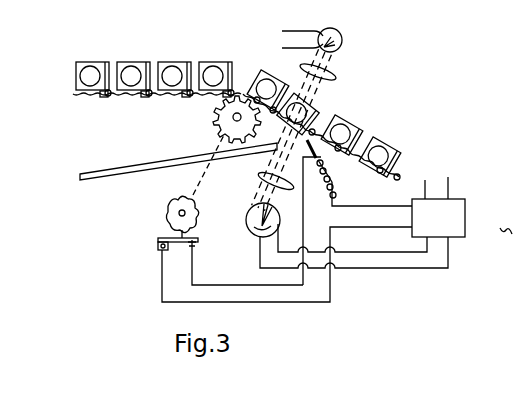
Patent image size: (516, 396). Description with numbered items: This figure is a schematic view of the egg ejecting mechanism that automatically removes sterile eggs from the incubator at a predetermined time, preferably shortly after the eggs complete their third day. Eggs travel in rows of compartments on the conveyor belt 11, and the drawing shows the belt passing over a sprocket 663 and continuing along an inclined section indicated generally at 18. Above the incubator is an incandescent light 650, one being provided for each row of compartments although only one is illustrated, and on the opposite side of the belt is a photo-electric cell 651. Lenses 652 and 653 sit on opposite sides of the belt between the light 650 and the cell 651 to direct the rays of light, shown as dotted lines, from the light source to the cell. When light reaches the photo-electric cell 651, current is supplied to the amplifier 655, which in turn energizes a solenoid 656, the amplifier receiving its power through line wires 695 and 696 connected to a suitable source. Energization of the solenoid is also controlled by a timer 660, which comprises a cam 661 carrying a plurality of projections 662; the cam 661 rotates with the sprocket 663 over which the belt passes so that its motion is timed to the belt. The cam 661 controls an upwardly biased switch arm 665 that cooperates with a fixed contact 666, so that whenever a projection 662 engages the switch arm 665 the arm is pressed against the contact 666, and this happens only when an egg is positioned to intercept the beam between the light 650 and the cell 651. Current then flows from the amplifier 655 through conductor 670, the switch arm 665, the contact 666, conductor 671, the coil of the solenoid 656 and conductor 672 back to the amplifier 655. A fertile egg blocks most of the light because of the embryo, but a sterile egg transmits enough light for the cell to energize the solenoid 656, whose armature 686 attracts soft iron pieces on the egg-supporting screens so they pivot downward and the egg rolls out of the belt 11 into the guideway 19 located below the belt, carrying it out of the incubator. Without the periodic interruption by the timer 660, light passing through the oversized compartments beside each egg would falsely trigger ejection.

The conveyor belt 11 is at (83, 97).
The inclined conveyor section 18 is at (373, 59).
The guideway 19 is at (119, 172).
The incandescent light 650 is at (337, 34).
The photo-electric cell 651 is at (247, 218).
The lens 652 is at (334, 79).
The lens 653 is at (262, 178).
The amplifier 655 is at (466, 205).
The solenoid 656 is at (334, 180).
The timer 660 is at (171, 206).
The cam 661 is at (173, 199).
The projection 662 is at (196, 207).
The sprocket 663 is at (212, 122).
The switch arm 665 is at (197, 242).
The fixed contact 666 is at (195, 250).
The conductor 670 is at (366, 230).
The conductor 671 is at (258, 270).
The conductor 672 is at (389, 206).
The armature 686 is at (325, 198).
The line wire 695 is at (426, 178).
The line wire 696 is at (449, 180).